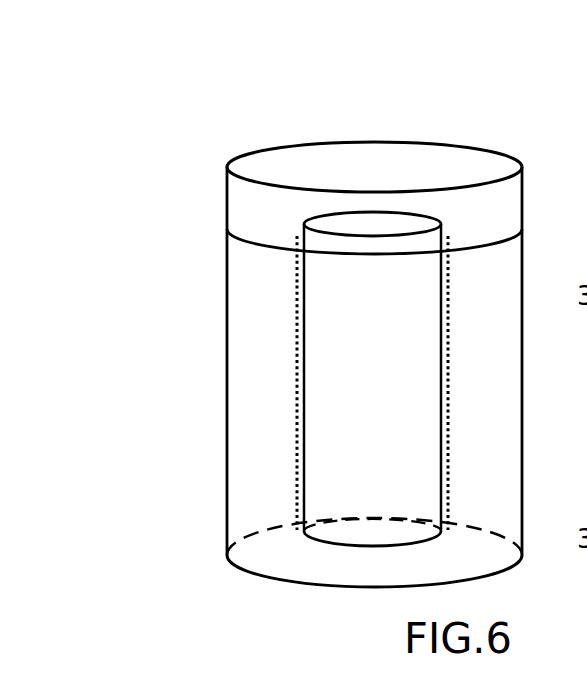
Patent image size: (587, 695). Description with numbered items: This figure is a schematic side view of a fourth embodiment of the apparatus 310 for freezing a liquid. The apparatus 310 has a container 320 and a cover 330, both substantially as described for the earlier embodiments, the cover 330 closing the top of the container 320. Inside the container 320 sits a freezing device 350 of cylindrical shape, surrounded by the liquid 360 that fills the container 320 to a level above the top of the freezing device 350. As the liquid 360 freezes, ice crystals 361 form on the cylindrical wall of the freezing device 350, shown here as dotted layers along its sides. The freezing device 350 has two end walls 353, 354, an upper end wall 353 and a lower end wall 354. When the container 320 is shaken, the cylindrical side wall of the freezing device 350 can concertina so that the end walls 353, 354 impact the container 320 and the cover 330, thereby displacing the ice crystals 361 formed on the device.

The apparatus 310 is at (305, 311).
The container 320 is at (214, 500).
The cover 330 is at (447, 96).
The freezing device 350 is at (294, 331).
The end wall 353 is at (393, 222).
The end wall 354 is at (363, 537).
The liquid 360 is at (255, 312).
The ice crystals 361 is at (293, 366).